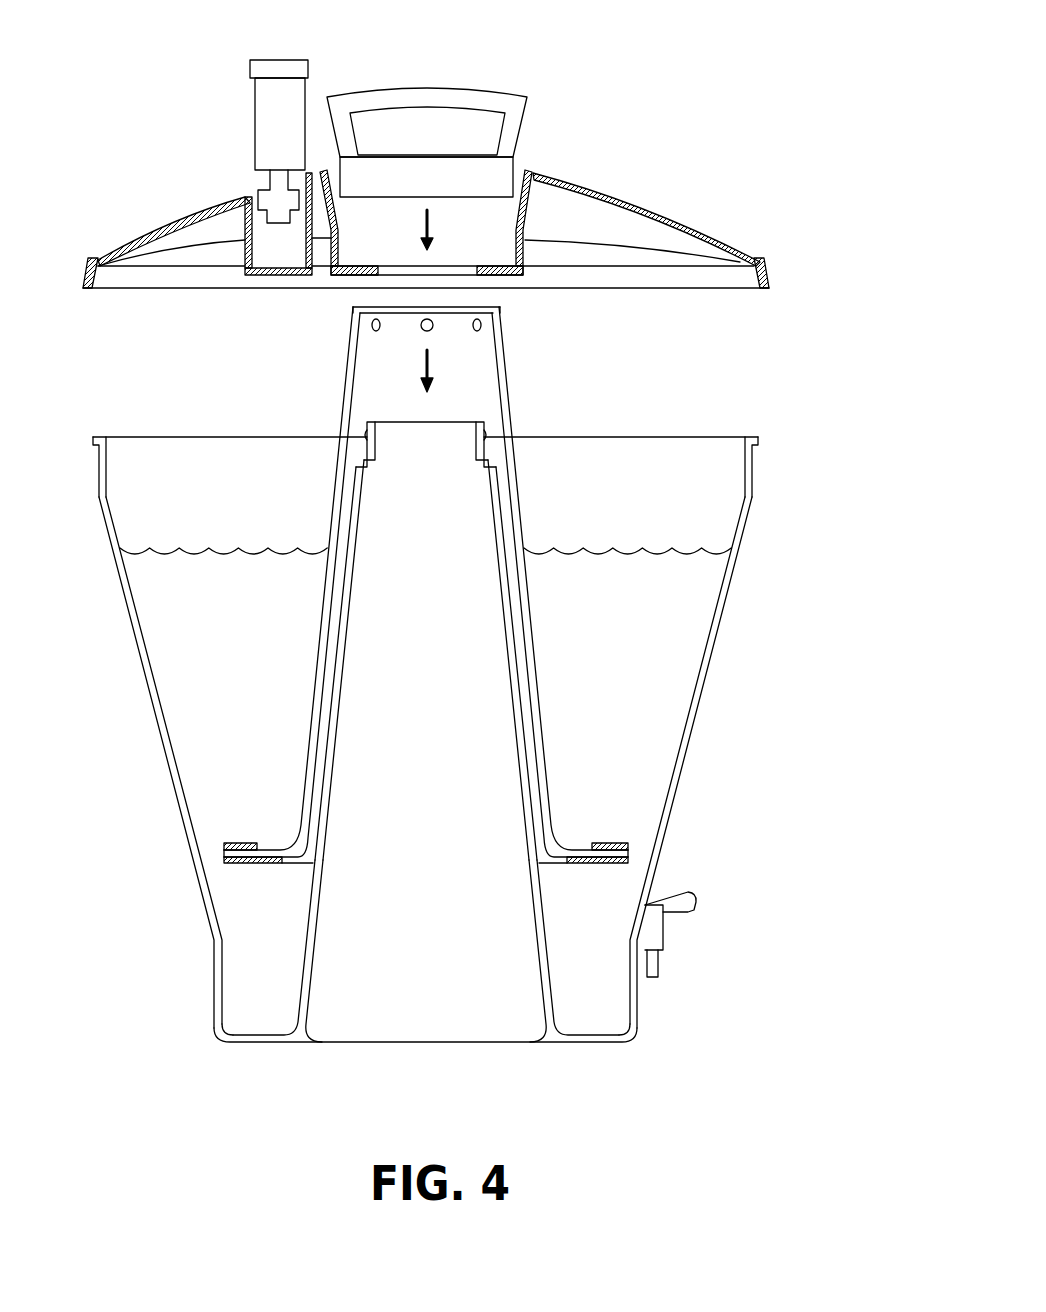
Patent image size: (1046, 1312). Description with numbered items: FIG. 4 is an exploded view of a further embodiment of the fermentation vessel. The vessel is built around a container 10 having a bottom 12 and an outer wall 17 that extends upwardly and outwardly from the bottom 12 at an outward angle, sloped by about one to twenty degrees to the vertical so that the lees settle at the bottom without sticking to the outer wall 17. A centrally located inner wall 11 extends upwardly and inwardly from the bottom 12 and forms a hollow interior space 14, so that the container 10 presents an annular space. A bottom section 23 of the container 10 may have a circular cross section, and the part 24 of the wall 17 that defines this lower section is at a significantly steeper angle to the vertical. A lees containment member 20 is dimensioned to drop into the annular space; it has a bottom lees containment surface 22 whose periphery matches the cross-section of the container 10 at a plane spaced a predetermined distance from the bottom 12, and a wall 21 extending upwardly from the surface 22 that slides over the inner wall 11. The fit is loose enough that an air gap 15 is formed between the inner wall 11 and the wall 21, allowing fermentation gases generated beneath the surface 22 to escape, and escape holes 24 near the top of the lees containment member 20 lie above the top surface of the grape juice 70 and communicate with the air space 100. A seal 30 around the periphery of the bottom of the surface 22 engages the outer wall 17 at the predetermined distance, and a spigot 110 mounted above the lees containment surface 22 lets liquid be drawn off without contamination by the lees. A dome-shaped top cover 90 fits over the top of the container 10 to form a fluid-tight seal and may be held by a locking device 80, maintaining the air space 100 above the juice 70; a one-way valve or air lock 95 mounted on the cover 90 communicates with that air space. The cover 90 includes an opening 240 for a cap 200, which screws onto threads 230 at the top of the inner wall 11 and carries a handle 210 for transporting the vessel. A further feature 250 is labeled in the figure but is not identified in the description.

The container 10 is at (444, 532).
The inner wall 11 is at (545, 940).
The bottom 12 is at (595, 1045).
The hollow interior space 14 is at (433, 877).
The air gap 15 is at (323, 713).
The outer wall 17 is at (173, 783).
The lees containment member 20 is at (545, 662).
The wall of lees containment member 21 is at (318, 638).
The lees containment surface 22 is at (282, 845).
The bottom section 23 is at (245, 1018).
The escape holes 24 is at (372, 324).
The seal 30 is at (223, 858).
The grape juice 70 is at (165, 612).
The locking device 80 is at (372, 95).
The top cover 90 is at (643, 203).
The one way valve or air lock 95 is at (268, 100).
The air space 100 is at (265, 237).
The spigot 110 is at (693, 902).
The cap 200 is at (527, 97).
The handle 210 is at (465, 100).
The threads 230 is at (487, 428).
The opening 240 is at (490, 248).
The collar lip 250 is at (505, 462).